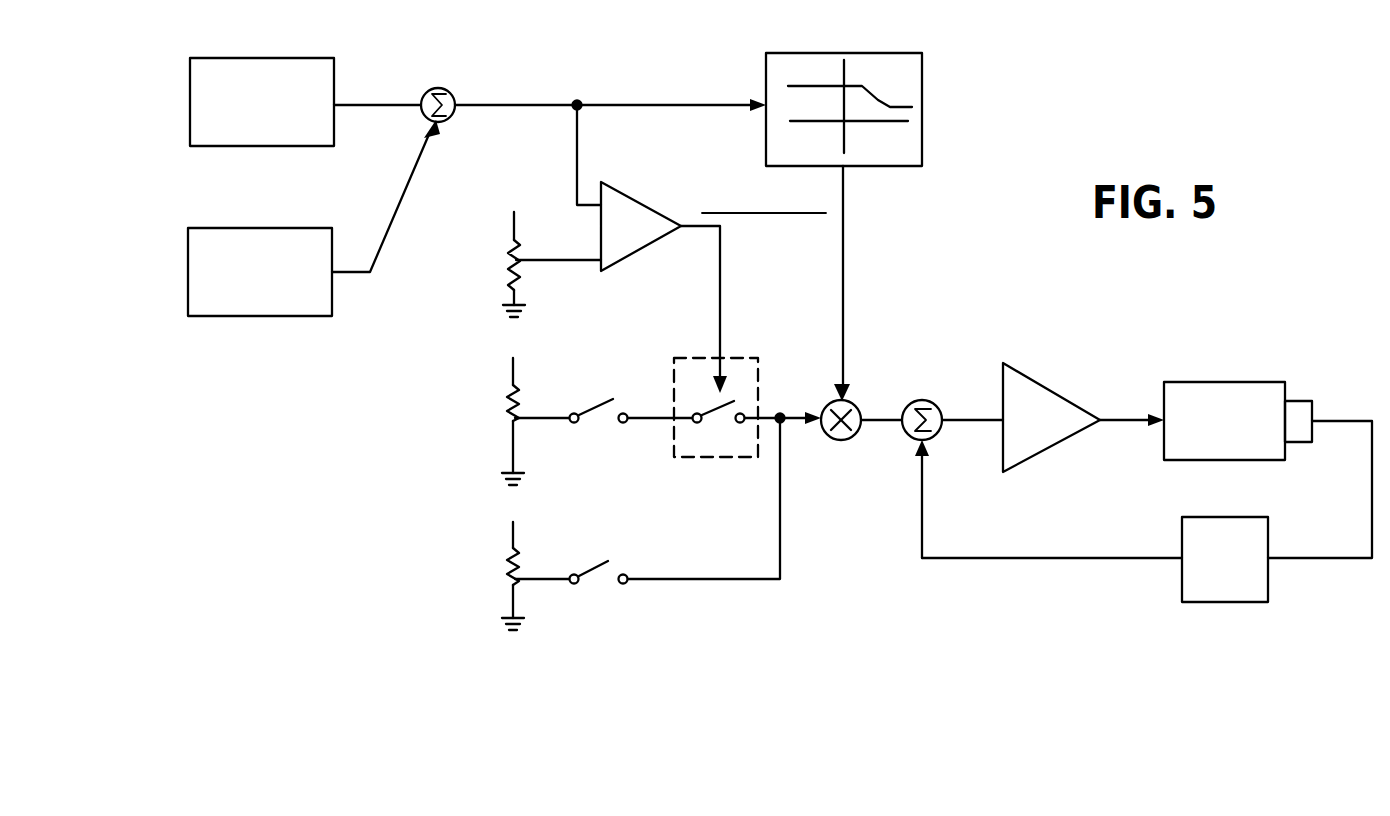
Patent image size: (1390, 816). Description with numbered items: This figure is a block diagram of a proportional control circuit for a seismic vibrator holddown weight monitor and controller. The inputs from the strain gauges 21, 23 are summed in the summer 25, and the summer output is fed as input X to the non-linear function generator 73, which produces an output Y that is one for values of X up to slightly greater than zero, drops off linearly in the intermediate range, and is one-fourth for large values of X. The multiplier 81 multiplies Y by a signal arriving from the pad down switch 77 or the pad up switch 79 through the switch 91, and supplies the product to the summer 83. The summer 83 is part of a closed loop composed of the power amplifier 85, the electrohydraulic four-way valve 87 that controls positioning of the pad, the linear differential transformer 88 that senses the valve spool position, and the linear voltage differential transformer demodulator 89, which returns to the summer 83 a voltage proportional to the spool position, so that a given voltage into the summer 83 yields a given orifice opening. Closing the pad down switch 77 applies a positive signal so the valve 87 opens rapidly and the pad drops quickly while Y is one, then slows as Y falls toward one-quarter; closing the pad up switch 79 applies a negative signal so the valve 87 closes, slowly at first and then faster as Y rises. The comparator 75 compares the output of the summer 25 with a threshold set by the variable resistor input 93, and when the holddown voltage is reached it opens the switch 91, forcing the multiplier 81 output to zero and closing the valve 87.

The strain gauge 21 is at (246, 117).
The strain gauge 23 is at (244, 284).
The summer 25 is at (436, 89).
The non-linear function generator 73 is at (922, 147).
The comparator 75 is at (641, 206).
The pad down switch 77 is at (600, 432).
The pad up switch 79 is at (600, 596).
The multiplier 81 is at (853, 405).
The summer 83 is at (931, 402).
The power amplifier 85 is at (1062, 392).
The electrohydraulic four-way valve 87 is at (1217, 382).
The linear differential transformer 88 is at (1300, 401).
The linear voltage differential transformer demodulator 89 is at (1215, 602).
The switch 91 is at (752, 369).
The variable resistor input 93 is at (488, 247).